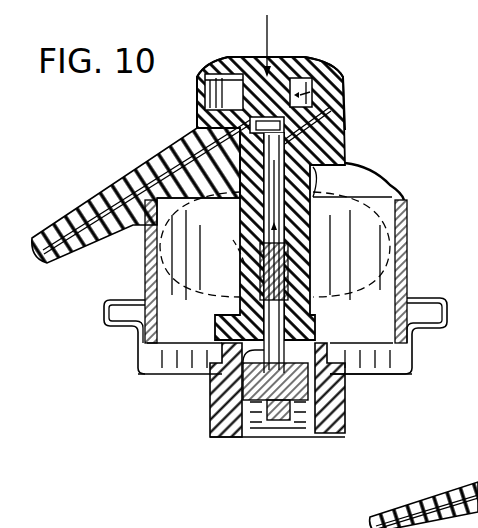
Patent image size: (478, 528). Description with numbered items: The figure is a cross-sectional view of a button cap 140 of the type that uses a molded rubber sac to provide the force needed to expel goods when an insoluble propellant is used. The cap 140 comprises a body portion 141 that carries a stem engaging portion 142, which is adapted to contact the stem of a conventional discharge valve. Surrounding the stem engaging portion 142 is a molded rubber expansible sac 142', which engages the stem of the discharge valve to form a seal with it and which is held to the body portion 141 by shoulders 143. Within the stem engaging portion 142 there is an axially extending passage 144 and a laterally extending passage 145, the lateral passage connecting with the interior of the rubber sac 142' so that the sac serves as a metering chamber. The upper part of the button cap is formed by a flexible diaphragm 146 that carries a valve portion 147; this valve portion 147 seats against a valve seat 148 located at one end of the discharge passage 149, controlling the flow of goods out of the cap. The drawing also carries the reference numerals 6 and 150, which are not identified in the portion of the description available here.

The valve 6 is at (290, 378).
The cap 140 is at (422, 172).
The body portion 141 is at (400, 242).
The stem engaging portion 142 is at (281, 220).
The molded rubber expansible sac 142' is at (202, 242).
The shoulders 143 is at (347, 138).
The axially extending passage 144 is at (282, 225).
The laterally extending passage 145 is at (286, 213).
The flexible diaphragm 146 is at (290, 62).
The valve portion 147 is at (300, 92).
The valve seat 148 is at (200, 113).
The discharge passage 149 is at (122, 180).
The lever 150 is at (477, 457).